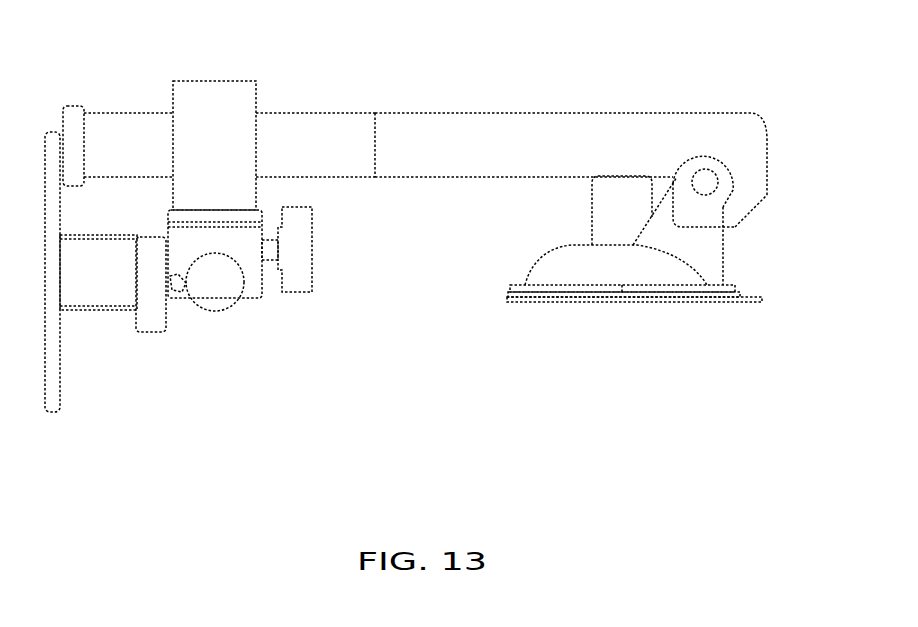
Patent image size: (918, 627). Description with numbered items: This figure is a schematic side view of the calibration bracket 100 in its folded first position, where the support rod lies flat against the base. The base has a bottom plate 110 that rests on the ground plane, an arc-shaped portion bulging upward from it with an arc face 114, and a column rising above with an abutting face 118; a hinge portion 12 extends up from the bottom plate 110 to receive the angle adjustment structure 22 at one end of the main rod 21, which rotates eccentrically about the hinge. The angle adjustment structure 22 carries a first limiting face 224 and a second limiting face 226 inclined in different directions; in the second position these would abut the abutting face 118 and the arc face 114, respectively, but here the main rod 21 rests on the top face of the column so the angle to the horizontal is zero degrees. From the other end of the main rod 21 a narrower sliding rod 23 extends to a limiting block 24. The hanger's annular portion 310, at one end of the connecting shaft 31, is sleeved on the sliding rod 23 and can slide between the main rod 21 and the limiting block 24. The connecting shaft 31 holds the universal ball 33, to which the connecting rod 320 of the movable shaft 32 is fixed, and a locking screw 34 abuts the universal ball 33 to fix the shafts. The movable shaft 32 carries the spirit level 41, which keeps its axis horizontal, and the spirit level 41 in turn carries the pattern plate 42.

The calibration bracket 100 is at (692, 52).
The hinge portion 12 is at (707, 268).
The bottom plate 110 is at (520, 297).
The arc face 114 is at (555, 273).
The abutting face 118 is at (603, 228).
The main rod 21 is at (527, 143).
The angle adjustment structure 22 is at (745, 153).
The first limiting face 224 is at (752, 214).
The second limiting face 226 is at (768, 128).
The sliding rod 23 is at (312, 143).
The limiting block 24 is at (68, 122).
The annular portion 310 is at (203, 117).
The connecting shaft 31 is at (252, 288).
The movable shaft 32 is at (143, 322).
The connecting rod 320 is at (177, 285).
The universal ball 33 is at (218, 307).
The locking screw 34 is at (300, 270).
The spirit level 41 is at (85, 295).
The pattern plate 42 is at (52, 412).